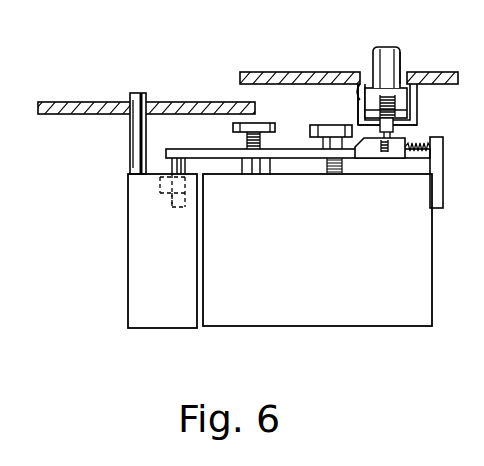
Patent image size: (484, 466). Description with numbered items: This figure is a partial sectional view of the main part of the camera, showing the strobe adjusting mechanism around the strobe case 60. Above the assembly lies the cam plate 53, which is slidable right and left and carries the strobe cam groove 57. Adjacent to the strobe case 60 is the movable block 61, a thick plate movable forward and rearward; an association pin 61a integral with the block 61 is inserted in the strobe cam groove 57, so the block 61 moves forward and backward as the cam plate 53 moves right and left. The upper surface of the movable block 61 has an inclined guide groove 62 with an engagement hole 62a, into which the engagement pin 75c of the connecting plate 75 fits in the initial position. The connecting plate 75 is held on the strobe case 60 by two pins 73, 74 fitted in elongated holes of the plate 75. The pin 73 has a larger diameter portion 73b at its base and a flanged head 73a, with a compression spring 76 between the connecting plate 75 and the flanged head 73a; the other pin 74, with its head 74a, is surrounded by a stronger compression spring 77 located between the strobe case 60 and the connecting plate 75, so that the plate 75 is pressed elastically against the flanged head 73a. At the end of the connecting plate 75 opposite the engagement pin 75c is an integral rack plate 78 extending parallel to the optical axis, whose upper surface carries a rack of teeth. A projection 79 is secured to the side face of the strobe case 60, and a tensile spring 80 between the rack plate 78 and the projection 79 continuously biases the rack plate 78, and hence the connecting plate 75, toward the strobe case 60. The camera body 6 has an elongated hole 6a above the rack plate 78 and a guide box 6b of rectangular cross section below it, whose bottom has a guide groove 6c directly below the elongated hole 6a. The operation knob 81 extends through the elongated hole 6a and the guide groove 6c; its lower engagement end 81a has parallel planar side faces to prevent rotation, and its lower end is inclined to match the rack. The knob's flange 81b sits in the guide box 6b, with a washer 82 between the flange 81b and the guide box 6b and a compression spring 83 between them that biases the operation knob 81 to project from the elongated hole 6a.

The cam plate 53 is at (60, 101).
The strobe cam groove 57 is at (133, 96).
The association pin 61a is at (133, 130).
The camera body 6 is at (287, 72).
The elongated hole 6a is at (356, 86).
The guide box 6b is at (412, 112).
The guide groove 6c is at (394, 127).
The compression spring 83 is at (358, 92).
The washer 82 is at (407, 100).
The operation knob 81 is at (387, 47).
The lower engagement end 81a is at (386, 134).
The flange 81b is at (400, 68).
The connecting plate 75 is at (292, 149).
The rack plate 78 is at (380, 153).
The tensile spring 80 is at (425, 152).
The projection 79 is at (443, 190).
The flanged head 73a is at (237, 124).
The pin 73 is at (250, 122).
The compression spring 76 is at (248, 143).
The larger diameter portion 73b is at (252, 163).
The head of shaft 74a is at (320, 126).
The pin 74 is at (333, 128).
The compression spring 77 is at (331, 173).
The engagement pin 75c is at (172, 167).
The inclined guide groove 62 is at (160, 183).
The engagement hole 62a is at (168, 207).
The movable block 61 is at (166, 328).
The strobe case 60 is at (300, 326).